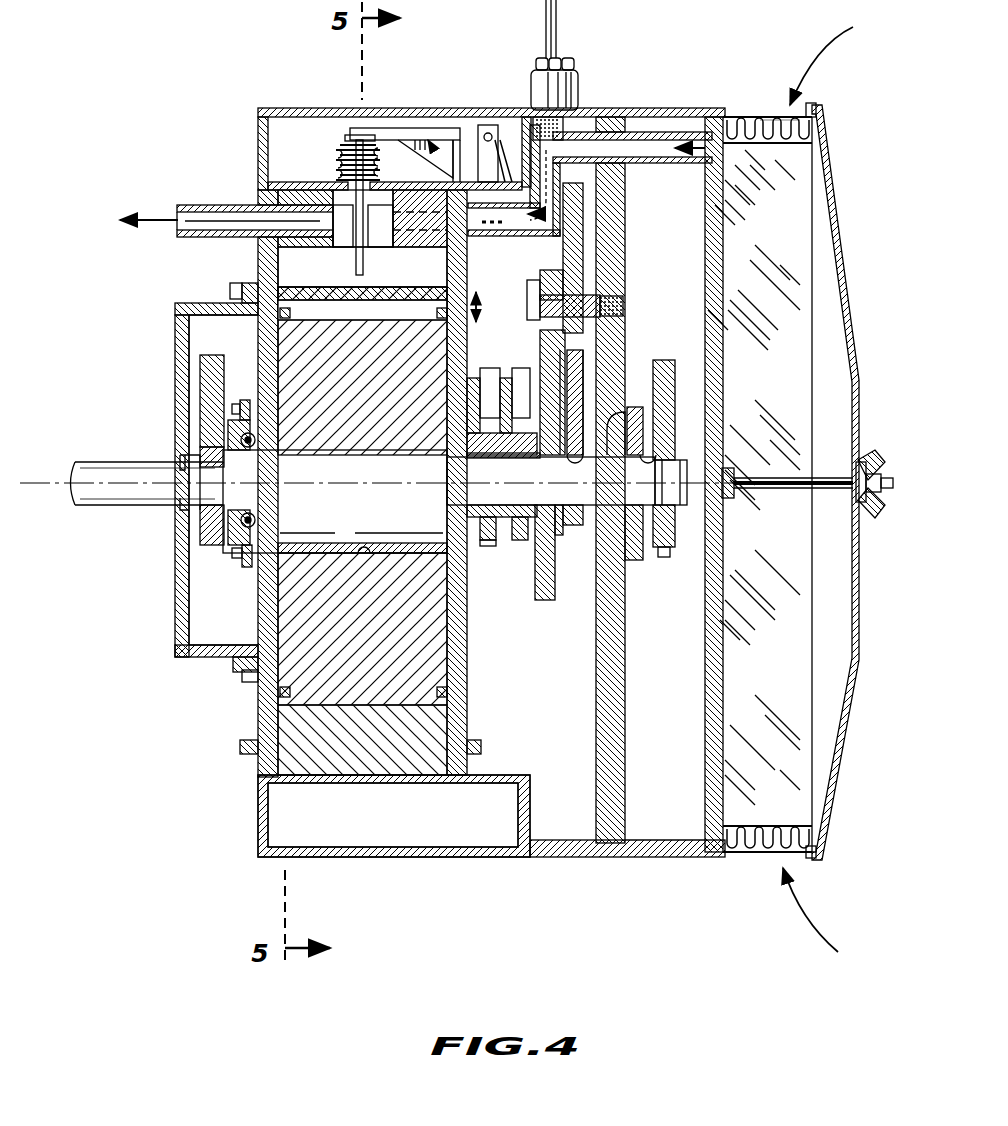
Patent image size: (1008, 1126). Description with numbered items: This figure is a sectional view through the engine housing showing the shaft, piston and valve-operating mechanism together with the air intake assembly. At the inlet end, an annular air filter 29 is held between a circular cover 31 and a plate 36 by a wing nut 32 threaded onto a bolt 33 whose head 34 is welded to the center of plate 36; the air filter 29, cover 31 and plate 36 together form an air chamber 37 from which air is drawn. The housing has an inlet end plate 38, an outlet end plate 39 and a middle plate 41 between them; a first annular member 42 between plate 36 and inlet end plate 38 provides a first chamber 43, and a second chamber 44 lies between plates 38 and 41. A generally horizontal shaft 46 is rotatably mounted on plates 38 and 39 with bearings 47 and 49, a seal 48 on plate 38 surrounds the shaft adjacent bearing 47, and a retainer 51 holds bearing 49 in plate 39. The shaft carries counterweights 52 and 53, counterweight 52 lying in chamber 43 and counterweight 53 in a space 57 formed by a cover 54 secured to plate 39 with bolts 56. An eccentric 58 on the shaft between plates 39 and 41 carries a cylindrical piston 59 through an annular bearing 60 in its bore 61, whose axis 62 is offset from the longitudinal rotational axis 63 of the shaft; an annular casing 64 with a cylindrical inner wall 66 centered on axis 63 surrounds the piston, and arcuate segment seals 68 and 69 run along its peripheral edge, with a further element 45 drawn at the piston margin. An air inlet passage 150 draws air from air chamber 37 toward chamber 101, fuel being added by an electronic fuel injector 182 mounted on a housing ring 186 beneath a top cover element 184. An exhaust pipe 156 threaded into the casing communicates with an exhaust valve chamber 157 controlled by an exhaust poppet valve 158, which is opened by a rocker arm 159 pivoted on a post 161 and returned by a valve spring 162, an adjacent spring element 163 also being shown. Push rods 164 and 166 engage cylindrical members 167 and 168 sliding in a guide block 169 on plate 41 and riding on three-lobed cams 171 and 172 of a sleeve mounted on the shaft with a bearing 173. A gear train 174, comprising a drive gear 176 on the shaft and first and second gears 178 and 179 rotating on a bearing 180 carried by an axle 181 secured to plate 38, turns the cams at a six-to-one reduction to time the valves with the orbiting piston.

The annular air filter 29 is at (768, 118).
The circular cover 31 is at (850, 215).
The wing nut 32 is at (876, 455).
The bolt 33 is at (893, 484).
The head 34 is at (730, 468).
The plate 36 is at (722, 370).
The air chamber 37 is at (752, 741).
The inlet end plate 38 is at (610, 118).
The outlet end plate 39 is at (270, 715).
The middle plate 41 is at (458, 717).
The first annular member 42 is at (670, 858).
The first chamber 43 is at (645, 741).
The second chamber 44 is at (538, 741).
The rotor plate 45 is at (445, 445).
The shaft 46 is at (128, 462).
The bearing 47 is at (628, 412).
The seal 48 is at (643, 425).
The bearing 49 is at (238, 548).
The retainer 51 is at (252, 572).
The counterweight 52 is at (675, 370).
The counterweight 53 is at (212, 371).
The cover 54 is at (185, 600).
The bolts 56 is at (230, 290).
The space 57 is at (215, 632).
The eccentric 58 is at (302, 534).
The piston 59 is at (342, 650).
The annular bearing 60 is at (318, 445).
The bore 61 is at (364, 556).
The axis 62 is at (388, 508).
The longitudinal rotational axis 63 is at (40, 482).
The annular casing 64 is at (382, 754).
The cylindrical inner wall 66 is at (290, 270).
The arcuate segment seals 68 is at (280, 692).
The arcuate segment seals 69 is at (447, 692).
The chamber 101 is at (350, 286).
The air inlet passage 150 is at (597, 170).
The exhaust pipe 156 is at (212, 205).
The exhaust valve chamber 157 is at (338, 170).
The exhaust poppet valve 158 is at (372, 255).
The rocker arm 159 is at (395, 128).
The post 161 is at (448, 110).
The valve spring 162 is at (350, 140).
The spring 163 is at (338, 148).
The push rod 164 is at (583, 245).
The push rod 166 is at (498, 122).
The cylindrical member 167 is at (468, 378).
The cylindrical member 168 is at (500, 405).
The guide block 169 is at (478, 398).
The cam 171 is at (515, 542).
The cam 172 is at (490, 545).
The bearing 173 is at (530, 460).
The gear train 174 is at (590, 212).
The drive gear 176 is at (565, 555).
The first gear 178 is at (600, 330).
The second gear 179 is at (578, 358).
The bearing 180 is at (600, 275).
The axle 181 is at (583, 303).
The electronic fuel injector 182 is at (538, 70).
The cover 184 is at (258, 128).
The housing ring 186 is at (560, 858).